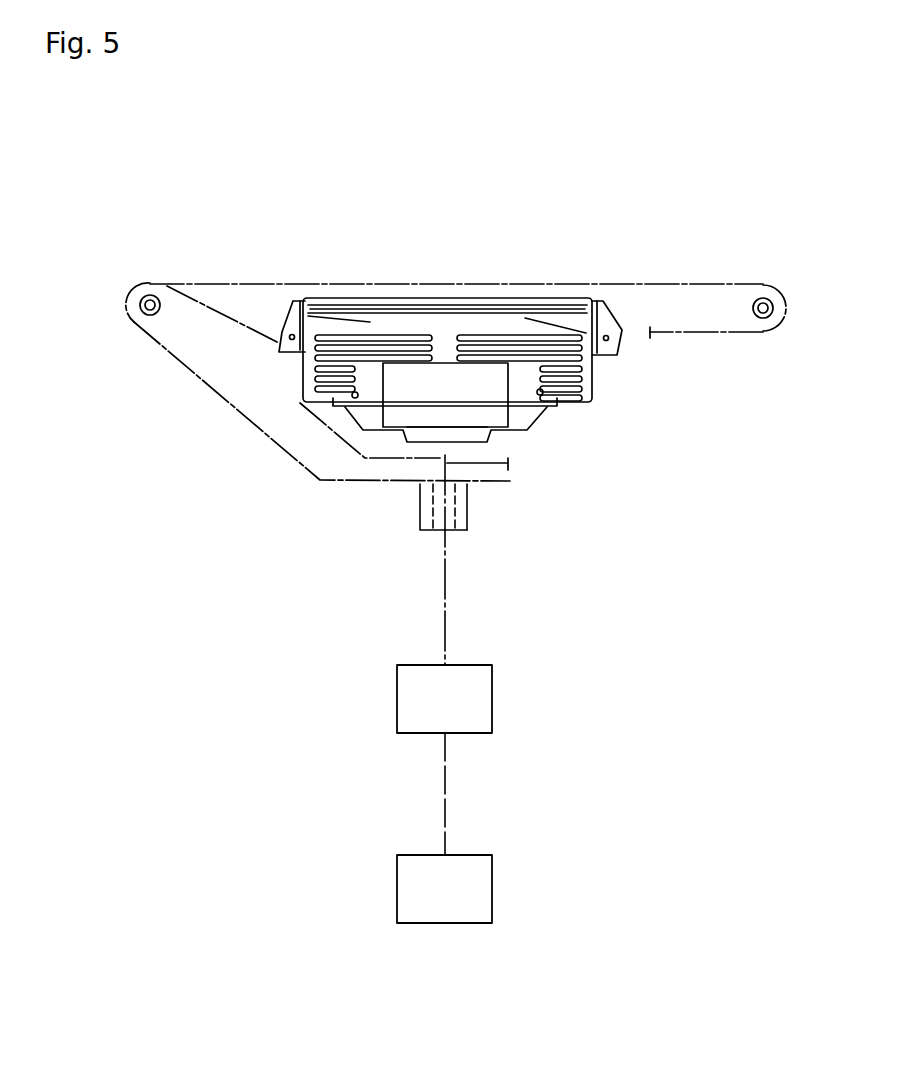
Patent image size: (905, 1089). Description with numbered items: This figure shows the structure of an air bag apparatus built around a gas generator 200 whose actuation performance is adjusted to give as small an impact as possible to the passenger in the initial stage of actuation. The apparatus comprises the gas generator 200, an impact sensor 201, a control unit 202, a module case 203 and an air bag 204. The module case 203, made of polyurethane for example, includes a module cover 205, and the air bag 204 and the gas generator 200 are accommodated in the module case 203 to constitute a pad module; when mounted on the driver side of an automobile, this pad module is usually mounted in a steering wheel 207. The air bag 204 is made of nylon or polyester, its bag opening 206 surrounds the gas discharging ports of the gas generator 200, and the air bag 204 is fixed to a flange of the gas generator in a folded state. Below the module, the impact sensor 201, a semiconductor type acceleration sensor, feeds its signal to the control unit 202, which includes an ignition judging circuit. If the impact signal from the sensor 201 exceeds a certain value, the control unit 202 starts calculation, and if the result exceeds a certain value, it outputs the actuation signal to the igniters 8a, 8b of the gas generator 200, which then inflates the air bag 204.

The gas generator 200 is at (360, 413).
The impact sensor 201 is at (397, 894).
The control unit 202 is at (397, 702).
The module case 203 is at (562, 298).
The air bag 204 is at (335, 322).
The module cover 205 is at (449, 299).
The bag opening 206 is at (553, 380).
The steering wheel 207 is at (665, 284).
The igniter 8a is at (420, 443).
The igniter 8b is at (463, 443).